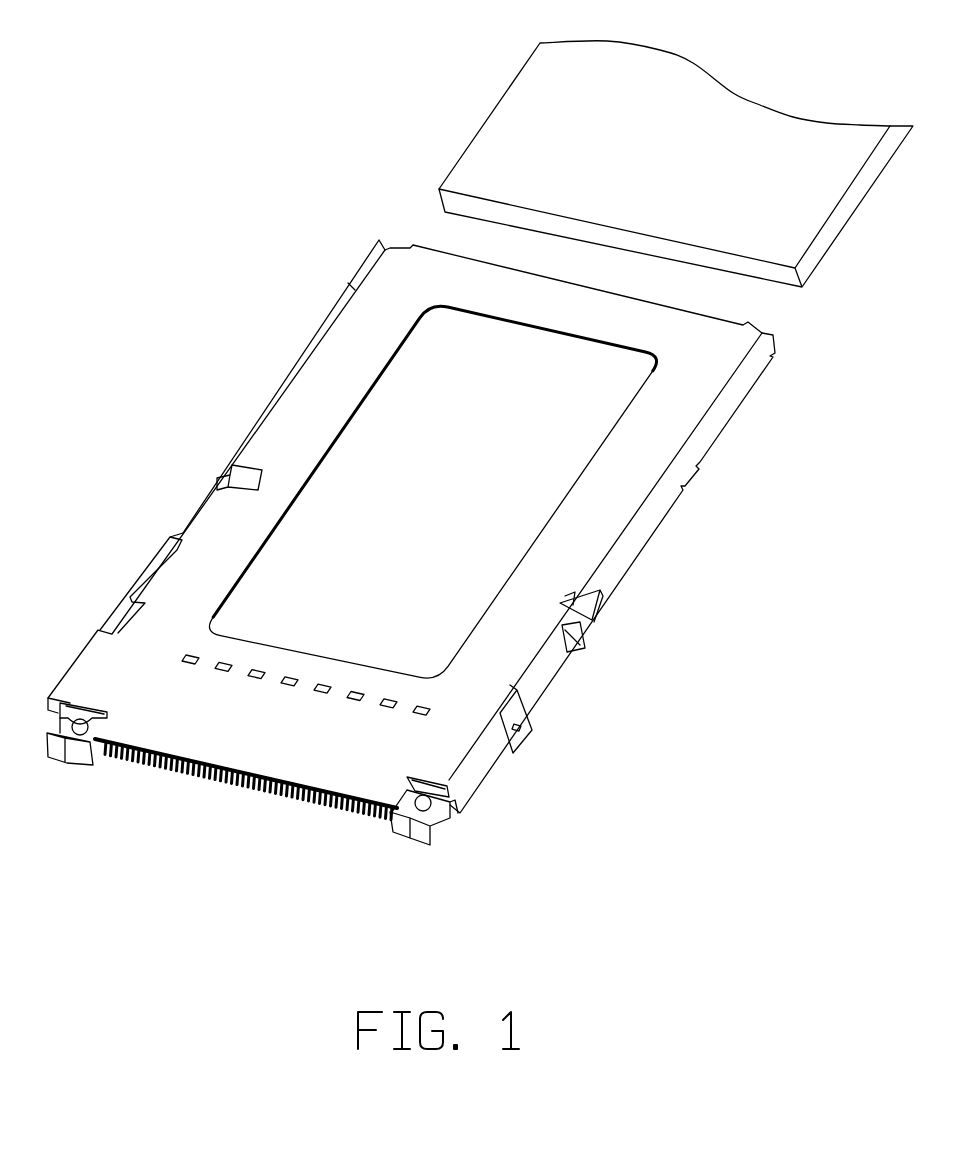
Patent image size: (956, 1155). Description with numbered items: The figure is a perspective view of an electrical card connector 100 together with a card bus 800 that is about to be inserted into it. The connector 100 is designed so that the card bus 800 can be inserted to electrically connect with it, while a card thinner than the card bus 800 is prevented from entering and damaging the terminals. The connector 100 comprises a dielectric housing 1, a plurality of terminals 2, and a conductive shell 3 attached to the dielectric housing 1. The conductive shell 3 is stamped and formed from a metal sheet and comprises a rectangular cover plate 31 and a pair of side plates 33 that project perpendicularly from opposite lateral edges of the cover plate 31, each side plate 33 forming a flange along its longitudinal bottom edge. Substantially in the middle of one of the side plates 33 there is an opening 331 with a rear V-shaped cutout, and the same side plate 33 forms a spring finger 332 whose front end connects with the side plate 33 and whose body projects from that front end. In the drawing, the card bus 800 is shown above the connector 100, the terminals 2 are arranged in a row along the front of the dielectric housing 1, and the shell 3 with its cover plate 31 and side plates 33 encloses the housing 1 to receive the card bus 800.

The card bus 800 is at (470, 96).
The electrical card connector 100 is at (148, 501).
The conductive shell 3 is at (346, 336).
The cover plate 31 is at (300, 425).
The side plates 33 is at (640, 525).
The opening 331 is at (600, 598).
The spring finger 332 is at (580, 636).
The terminals 2 is at (280, 797).
The dielectric housing 1 is at (428, 832).